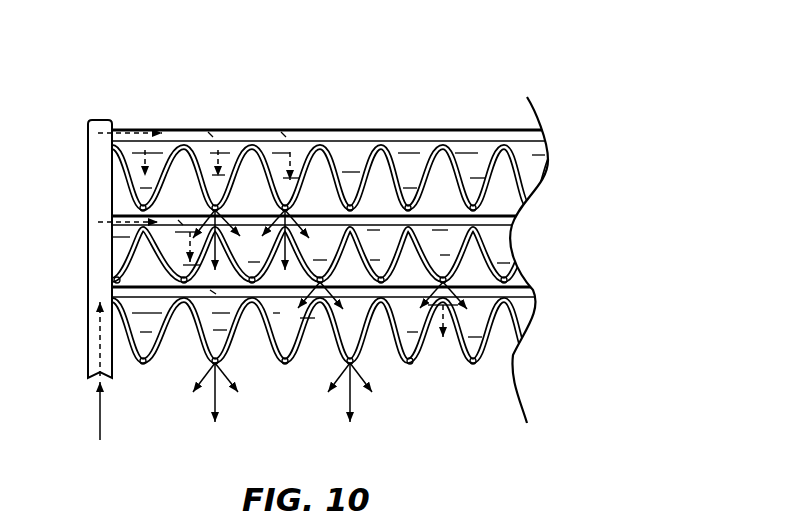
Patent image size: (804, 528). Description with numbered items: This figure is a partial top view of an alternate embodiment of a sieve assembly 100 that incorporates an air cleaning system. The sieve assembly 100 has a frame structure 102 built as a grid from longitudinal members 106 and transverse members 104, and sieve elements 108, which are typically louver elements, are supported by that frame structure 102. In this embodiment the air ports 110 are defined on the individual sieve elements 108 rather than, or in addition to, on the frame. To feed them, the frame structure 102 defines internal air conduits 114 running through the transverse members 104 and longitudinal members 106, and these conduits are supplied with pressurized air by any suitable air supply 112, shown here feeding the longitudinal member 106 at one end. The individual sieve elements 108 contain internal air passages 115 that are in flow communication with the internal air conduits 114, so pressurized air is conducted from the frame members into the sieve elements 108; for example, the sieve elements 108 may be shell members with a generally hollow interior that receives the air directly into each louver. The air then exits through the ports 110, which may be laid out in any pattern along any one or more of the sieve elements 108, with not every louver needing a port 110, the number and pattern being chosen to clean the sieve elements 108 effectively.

The sieve assembly 100 is at (522, 62).
The frame structure 102 is at (176, 126).
The transverse members 104 is at (483, 128).
The longitudinal members 106 is at (88, 173).
The sieve elements 108 is at (376, 150).
The air ports 110 is at (481, 199).
The air supply 112 is at (100, 410).
The internal air conduits 114 is at (145, 128).
The internal air passages 115 is at (307, 128).